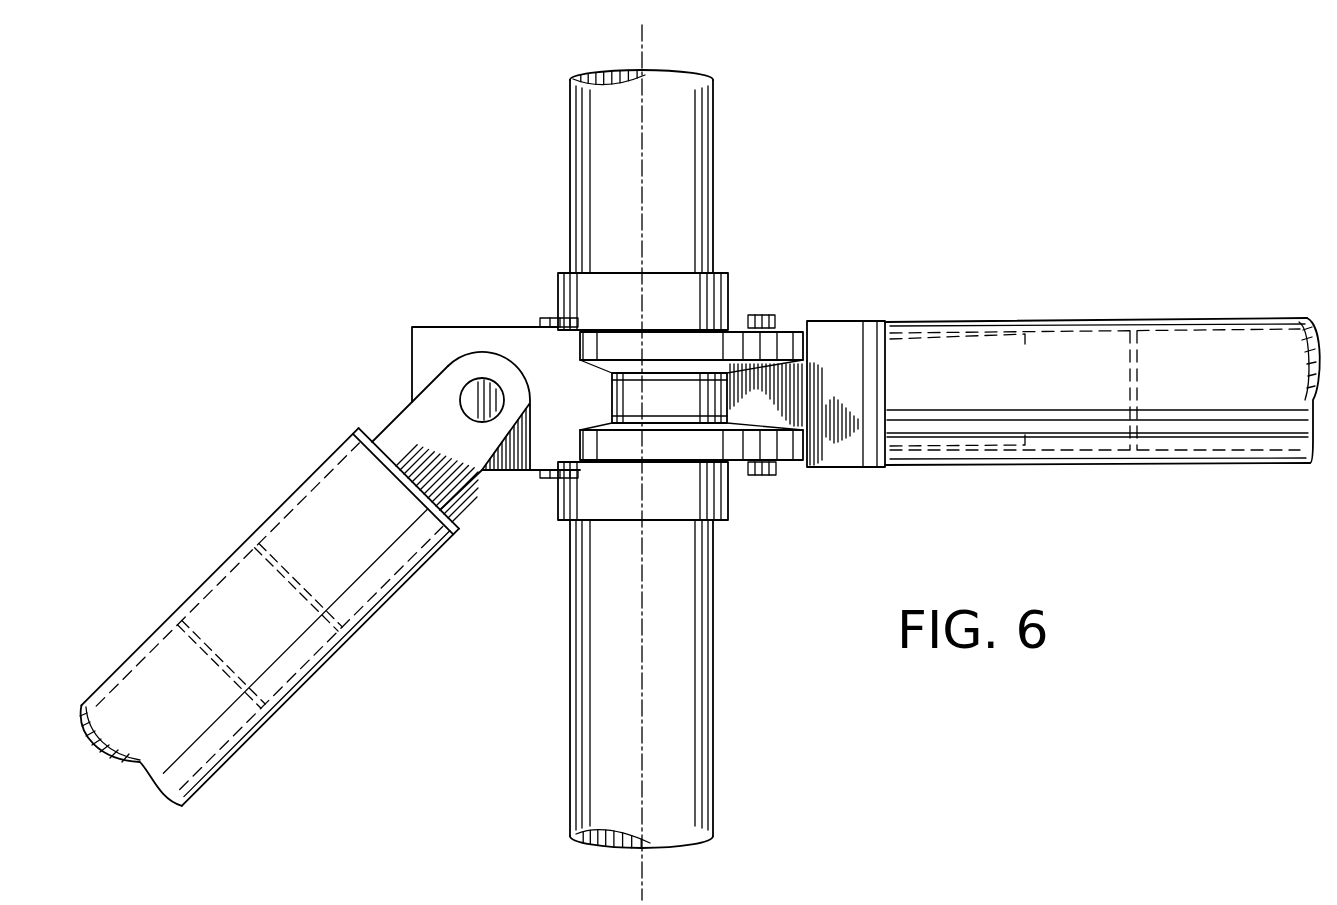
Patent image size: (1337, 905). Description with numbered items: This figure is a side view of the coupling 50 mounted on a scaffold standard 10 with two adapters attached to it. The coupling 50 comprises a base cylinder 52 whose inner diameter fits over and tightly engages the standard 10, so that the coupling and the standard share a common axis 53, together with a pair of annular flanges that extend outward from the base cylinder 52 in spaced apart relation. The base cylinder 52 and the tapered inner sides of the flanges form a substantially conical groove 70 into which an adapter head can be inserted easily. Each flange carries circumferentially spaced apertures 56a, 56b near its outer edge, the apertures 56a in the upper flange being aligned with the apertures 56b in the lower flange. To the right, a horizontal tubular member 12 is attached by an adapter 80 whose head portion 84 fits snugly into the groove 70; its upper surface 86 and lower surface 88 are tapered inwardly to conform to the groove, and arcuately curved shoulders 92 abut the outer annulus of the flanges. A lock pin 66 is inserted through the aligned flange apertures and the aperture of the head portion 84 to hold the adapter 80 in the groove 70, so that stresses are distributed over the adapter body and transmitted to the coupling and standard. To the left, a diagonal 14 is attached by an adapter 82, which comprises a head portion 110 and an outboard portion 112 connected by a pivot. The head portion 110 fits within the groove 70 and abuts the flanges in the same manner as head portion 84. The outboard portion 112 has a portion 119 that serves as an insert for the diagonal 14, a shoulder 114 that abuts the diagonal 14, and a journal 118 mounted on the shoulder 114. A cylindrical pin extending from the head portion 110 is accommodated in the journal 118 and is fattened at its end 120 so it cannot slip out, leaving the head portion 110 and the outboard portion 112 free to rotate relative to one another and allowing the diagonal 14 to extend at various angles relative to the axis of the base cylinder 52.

The standard 10 is at (683, 135).
The tubular member 12 is at (1072, 322).
The diagonal 14 is at (148, 792).
The coupling 50 is at (585, 315).
The base cylinder 52 is at (587, 312).
The axis 53 is at (648, 35).
The apertures 56a is at (778, 323).
The apertures 56b is at (763, 477).
The lock pin 66 is at (765, 322).
The groove 70 is at (668, 400).
The adapter 80 is at (857, 437).
The adapter 82 is at (428, 418).
The head portion 84 is at (838, 345).
The upper surface 86 is at (798, 325).
The lower surface 88 is at (778, 440).
The shoulders 92 is at (807, 443).
The head portion 110 is at (532, 347).
The outboard portion 112 is at (363, 587).
The shoulder 114 is at (457, 532).
The journal 118 is at (392, 430).
The portion 119 is at (283, 640).
The end 120 is at (488, 412).